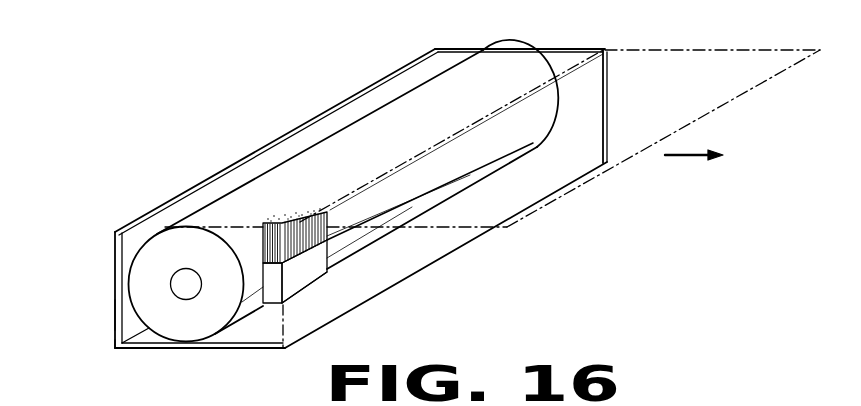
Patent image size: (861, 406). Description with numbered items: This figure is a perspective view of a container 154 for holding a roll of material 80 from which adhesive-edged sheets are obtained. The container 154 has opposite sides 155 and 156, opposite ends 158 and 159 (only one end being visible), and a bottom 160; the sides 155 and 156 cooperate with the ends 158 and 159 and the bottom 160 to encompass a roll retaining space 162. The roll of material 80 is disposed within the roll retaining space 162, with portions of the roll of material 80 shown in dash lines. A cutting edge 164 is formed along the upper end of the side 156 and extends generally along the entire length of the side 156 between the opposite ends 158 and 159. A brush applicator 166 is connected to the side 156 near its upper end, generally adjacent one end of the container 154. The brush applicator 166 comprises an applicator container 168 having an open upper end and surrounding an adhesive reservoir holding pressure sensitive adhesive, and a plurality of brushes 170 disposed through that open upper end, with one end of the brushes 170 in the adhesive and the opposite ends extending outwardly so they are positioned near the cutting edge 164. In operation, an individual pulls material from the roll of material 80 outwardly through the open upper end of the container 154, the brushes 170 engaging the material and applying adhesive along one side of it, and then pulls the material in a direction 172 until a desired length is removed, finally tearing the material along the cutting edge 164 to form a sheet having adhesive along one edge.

The roll of material 80 is at (159, 232).
The container 154 is at (113, 250).
The side 155 is at (115, 311).
The side 156 is at (284, 318).
The end 158 is at (115, 349).
The end 159 is at (435, 49).
The bottom 160 is at (218, 349).
The roll retaining space 162 is at (316, 199).
The cutting edge 164 is at (510, 100).
The brush applicator 166 is at (328, 275).
The applicator container 168 is at (303, 280).
The brushes 170 is at (292, 211).
The direction 172 is at (683, 155).